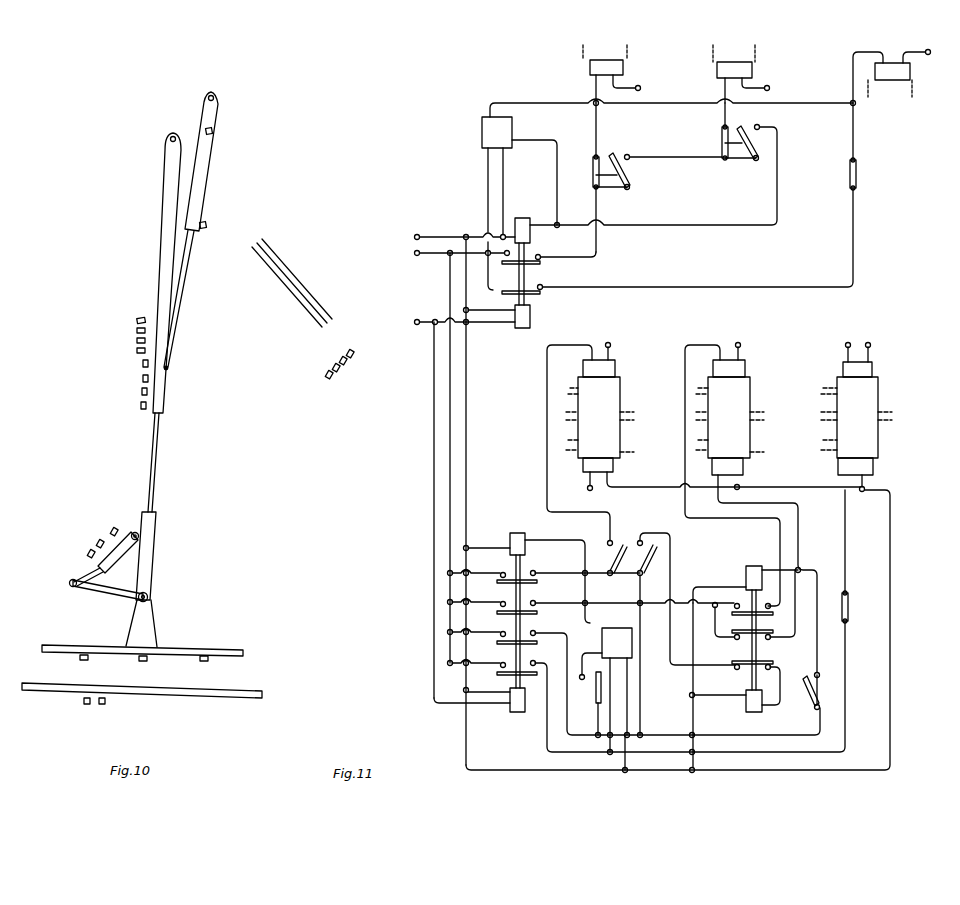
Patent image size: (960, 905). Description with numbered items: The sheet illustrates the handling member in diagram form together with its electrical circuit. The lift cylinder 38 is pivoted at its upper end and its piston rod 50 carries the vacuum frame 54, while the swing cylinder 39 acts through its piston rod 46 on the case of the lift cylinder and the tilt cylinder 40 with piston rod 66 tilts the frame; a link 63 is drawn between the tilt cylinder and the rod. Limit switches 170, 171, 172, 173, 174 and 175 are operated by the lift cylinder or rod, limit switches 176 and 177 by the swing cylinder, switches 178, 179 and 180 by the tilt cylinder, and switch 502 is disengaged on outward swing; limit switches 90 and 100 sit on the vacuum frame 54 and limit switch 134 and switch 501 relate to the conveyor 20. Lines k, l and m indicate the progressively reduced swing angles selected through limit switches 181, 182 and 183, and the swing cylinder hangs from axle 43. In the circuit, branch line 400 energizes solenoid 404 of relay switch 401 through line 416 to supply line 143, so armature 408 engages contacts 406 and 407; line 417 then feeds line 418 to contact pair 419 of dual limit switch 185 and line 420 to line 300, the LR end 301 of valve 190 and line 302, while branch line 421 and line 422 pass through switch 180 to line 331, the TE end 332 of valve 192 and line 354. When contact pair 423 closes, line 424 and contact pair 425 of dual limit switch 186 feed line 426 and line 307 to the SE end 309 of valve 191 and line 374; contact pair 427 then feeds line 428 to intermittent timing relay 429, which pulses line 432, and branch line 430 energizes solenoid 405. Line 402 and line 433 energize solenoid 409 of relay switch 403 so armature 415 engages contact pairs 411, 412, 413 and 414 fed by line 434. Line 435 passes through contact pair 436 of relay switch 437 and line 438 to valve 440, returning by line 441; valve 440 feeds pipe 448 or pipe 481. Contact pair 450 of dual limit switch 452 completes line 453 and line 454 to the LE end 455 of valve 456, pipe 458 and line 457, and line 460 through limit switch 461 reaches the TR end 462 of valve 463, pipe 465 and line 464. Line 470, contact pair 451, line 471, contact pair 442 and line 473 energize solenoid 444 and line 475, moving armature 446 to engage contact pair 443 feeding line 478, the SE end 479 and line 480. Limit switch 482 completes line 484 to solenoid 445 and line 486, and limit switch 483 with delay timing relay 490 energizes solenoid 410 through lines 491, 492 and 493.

In FIG. 10, the lift cylinder 38 is at (158, 254).
In FIG. 10, the swing cylinder 39 is at (200, 195).
In FIG. 10, the piston rod 46 is at (183, 296).
In FIG. 10, the limit switch 177 is at (213, 131).
In FIG. 10, the limit switch 176 is at (207, 225).
In FIG. 10, the limit switch 502 is at (140, 316).
In FIG. 10, the dual limit switch 185 is at (136, 331).
In FIG. 11, the dual limit switch 185 is at (632, 196).
In FIG. 10, the limit switch 175 is at (136, 341).
In FIG. 10, the limit switch 174 is at (136, 351).
In FIG. 10, the limit switch 173 is at (142, 364).
In FIG. 10, the limit switch 172 is at (142, 379).
In FIG. 10, the limit switch 171 is at (141, 392).
In FIG. 10, the limit switch 170 is at (140, 406).
In FIG. 10, the piston rod 50 is at (152, 476).
In FIG. 10, the tilt cylinder 40 is at (120, 556).
In FIG. 10, the piston rod 66 is at (70, 580).
In FIG. 10, the link 63 is at (100, 592).
In FIG. 10, the limit switch 178 is at (113, 526).
In FIG. 10, the limit switch 179 is at (98, 539).
In FIG. 10, the limit switch 180 is at (88, 552).
In FIG. 11, the limit switch 180 is at (857, 176).
In FIG. 10, the vacuum frame 54 is at (188, 644).
In FIG. 10, the limit switch 90 is at (88, 659).
In FIG. 10, the limit switch 100 is at (146, 660).
In FIG. 10, the conveyor 20 is at (244, 690).
In FIG. 10, the limit switch 134 is at (86, 704).
In FIG. 10, the limit switch 501 is at (104, 704).
In FIG. 10, the angularly disposed line k is at (268, 276).
In FIG. 10, the angularly disposed line l is at (280, 285).
In FIG. 10, the angularly disposed line m is at (292, 300).
In FIG. 10, the limit switch 181 is at (353, 354).
In FIG. 10, the limit switch 182 is at (346, 362).
In FIG. 10, the limit switch 183 is at (339, 369).
In FIG. 10, the dual limit switch 186 is at (329, 378).
In FIG. 11, the dual limit switch 186 is at (739, 173).
In FIG. 11, the line 432 is at (540, 104).
In FIG. 11, the intermittent timing relay 429 is at (497, 203).
In FIG. 11, the branch line 421 is at (506, 290).
In FIG. 11, the valve 190 is at (627, 53).
In FIG. 11, the LR end 301 is at (590, 68).
In FIG. 11, the line 300 is at (590, 89).
In FIG. 11, the line 302 is at (635, 77).
In FIG. 11, the valve 191 is at (755, 53).
In FIG. 11, the SE end 309 is at (717, 70).
In FIG. 11, the line 307 is at (725, 89).
In FIG. 11, the line 374 is at (765, 77).
In FIG. 11, the line 331 is at (860, 52).
In FIG. 11, the TE end 332 is at (910, 71).
In FIG. 11, the valve 192 is at (905, 89).
In FIG. 11, the line 354 is at (908, 51).
In FIG. 11, the line 422 is at (855, 130).
In FIG. 11, the line 420 is at (596, 134).
In FIG. 11, the contact pair 419 is at (592, 178).
In FIG. 11, the contact pair 423 is at (630, 177).
In FIG. 11, the line 424 is at (655, 156).
In FIG. 11, the line 418 is at (598, 211).
In FIG. 11, the contacts 406 is at (566, 250).
In FIG. 11, the line 428 is at (556, 172).
In FIG. 11, the line 426 is at (725, 118).
In FIG. 11, the contact pair 425 is at (724, 145).
In FIG. 11, the contact pair 427 is at (760, 143).
In FIG. 11, the branch line 430 is at (540, 217).
In FIG. 11, the solenoid 405 is at (531, 235).
In FIG. 11, the supply line 143 is at (443, 234).
In FIG. 11, the line 417 is at (432, 257).
In FIG. 11, the line 434 is at (449, 298).
In FIG. 11, the branch line 400 is at (465, 333).
In FIG. 11, the line 416 is at (486, 309).
In FIG. 11, the solenoid 404 is at (531, 325).
In FIG. 11, the armature 408 is at (527, 270).
In FIG. 11, the contacts 407 is at (542, 287).
In FIG. 11, the relay switch 401 is at (543, 303).
In FIG. 11, the line 402 is at (434, 625).
In FIG. 11, the line 493 is at (484, 546).
In FIG. 11, the solenoid 410 is at (515, 532).
In FIG. 11, the solenoid 409 is at (518, 713).
In FIG. 11, the relay switch 403 is at (498, 714).
In FIG. 11, the contact pair 411 is at (493, 568).
In FIG. 11, the contact pair 412 is at (493, 599).
In FIG. 11, the contact pair 413 is at (493, 629).
In FIG. 11, the contact pair 414 is at (493, 659).
In FIG. 11, the line 433 is at (487, 682).
In FIG. 11, the armature 415 is at (522, 628).
In FIG. 11, the line 492 is at (543, 539).
In FIG. 11, the line 453 is at (555, 572).
In FIG. 11, the line 435 is at (556, 597).
In FIG. 11, the contact pair 450 is at (604, 558).
In FIG. 11, the dual limit switch 452 is at (635, 530).
In FIG. 11, the contact pair 451 is at (687, 634).
In FIG. 11, the line 471 is at (670, 548).
In FIG. 11, the line 470 is at (548, 630).
In FIG. 11, the line 460 is at (546, 752).
In FIG. 11, the delay timing relay 490 is at (617, 699).
In FIG. 11, the line 491 is at (587, 658).
In FIG. 11, the limit switch 483 is at (596, 690).
In FIG. 11, the pipe 458 is at (575, 382).
In FIG. 11, the line 457 is at (610, 353).
In FIG. 11, the LE end 455 is at (615, 368).
In FIG. 11, the valve 456 is at (620, 448).
In FIG. 11, the line 454 is at (547, 420).
In FIG. 11, the line 441 is at (740, 484).
In FIG. 11, the pipe 481 is at (705, 382).
In FIG. 11, the line 480 is at (740, 353).
In FIG. 11, the SE end 479 is at (745, 368).
In FIG. 11, the valve 440 is at (750, 448).
In FIG. 11, the pipe 448 is at (712, 470).
In FIG. 11, the axle 43 is at (744, 468).
In FIG. 11, the line 478 is at (730, 519).
In FIG. 11, the line 438 is at (798, 505).
In FIG. 11, the line 484 is at (812, 570).
In FIG. 11, the pipe 465 is at (830, 450).
In FIG. 11, the valve 463 is at (878, 448).
In FIG. 11, the TR end 462 is at (874, 468).
In FIG. 11, the line 464 is at (866, 489).
In FIG. 11, the limit switch 461 is at (849, 606).
In FIG. 11, the solenoid 445 is at (754, 565).
In FIG. 11, the relay switch 437 is at (740, 574).
In FIG. 11, the solenoid 444 is at (748, 712).
In FIG. 11, the line 486 is at (700, 586).
In FIG. 11, the contact pair 443 is at (740, 601).
In FIG. 11, the armature 446 is at (758, 623).
In FIG. 11, the contact pair 436 is at (770, 639).
In FIG. 11, the contact pair 442 is at (734, 668).
In FIG. 11, the line 473 is at (766, 708).
In FIG. 11, the line 475 is at (710, 697).
In FIG. 11, the limit switch 482 is at (802, 694).